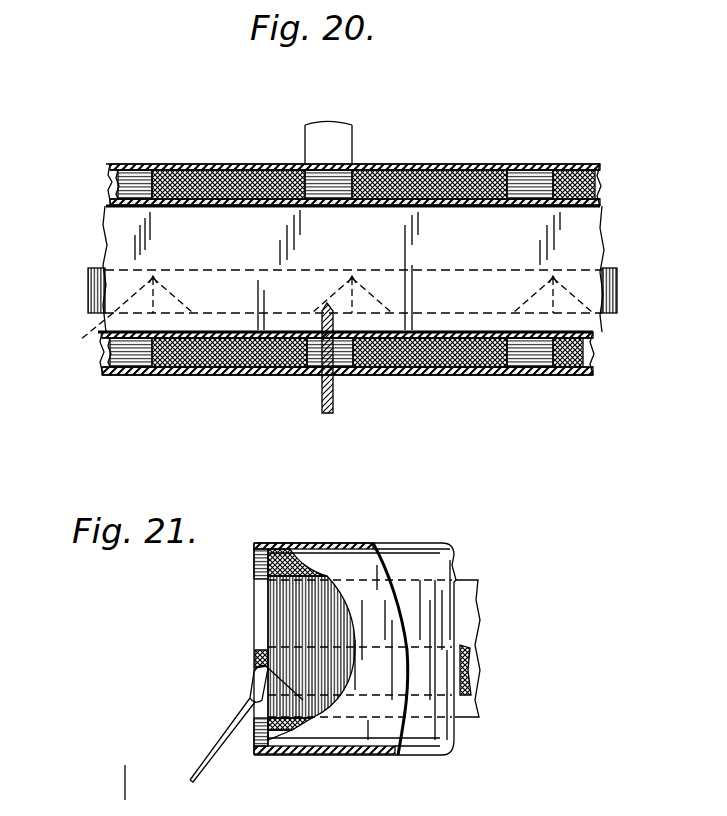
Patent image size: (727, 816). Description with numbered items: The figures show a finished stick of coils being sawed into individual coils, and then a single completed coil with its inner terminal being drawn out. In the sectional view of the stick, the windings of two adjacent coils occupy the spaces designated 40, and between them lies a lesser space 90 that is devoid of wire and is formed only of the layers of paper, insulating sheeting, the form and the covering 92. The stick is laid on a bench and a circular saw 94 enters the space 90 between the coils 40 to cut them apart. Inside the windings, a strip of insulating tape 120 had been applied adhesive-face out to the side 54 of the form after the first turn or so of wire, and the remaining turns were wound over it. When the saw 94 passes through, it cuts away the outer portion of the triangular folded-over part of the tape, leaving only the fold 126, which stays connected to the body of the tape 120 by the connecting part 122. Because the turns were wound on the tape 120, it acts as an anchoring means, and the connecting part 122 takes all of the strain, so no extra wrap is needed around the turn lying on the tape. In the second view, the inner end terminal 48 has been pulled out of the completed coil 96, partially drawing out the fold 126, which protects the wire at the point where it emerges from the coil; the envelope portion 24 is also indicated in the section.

In FIG. 20, the coil windings 40 is at (305, 164).
In FIG. 20, the covering 92 is at (190, 164).
In FIG. 20, the space 90 is at (328, 126).
In FIG. 20, the side of form 54 is at (352, 269).
In FIG. 21, the side of form 54 is at (255, 610).
In FIG. 20, the strip of insulating tape 120 is at (250, 305).
In FIG. 20, the lamp envelope 24 is at (312, 318).
In FIG. 20, the circular saw 94 is at (336, 382).
In FIG. 21, the coil 96 is at (368, 535).
In FIG. 21, the connecting part 122 is at (255, 660).
In FIG. 21, the fold 126 is at (248, 684).
In FIG. 21, the inner end terminal 48 is at (222, 755).